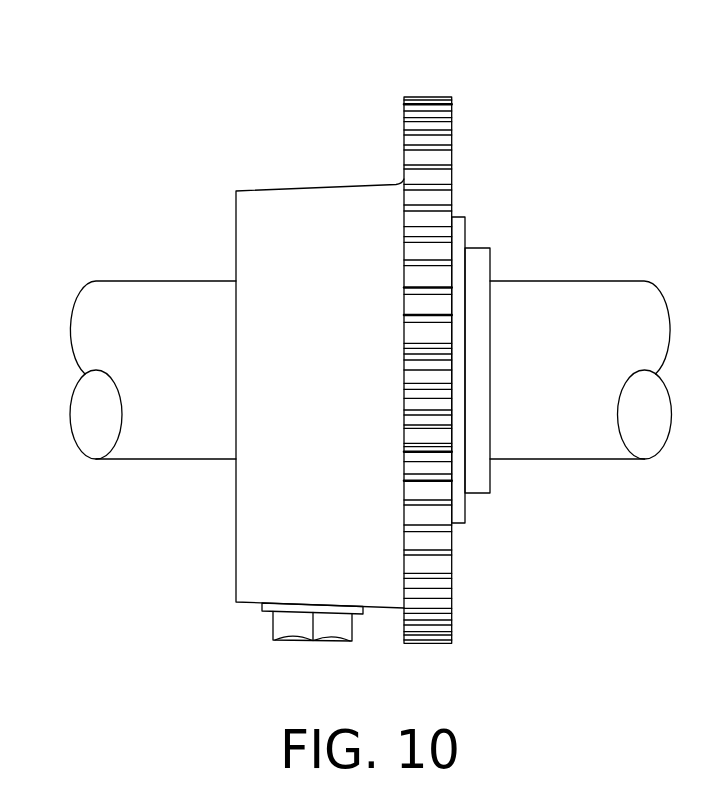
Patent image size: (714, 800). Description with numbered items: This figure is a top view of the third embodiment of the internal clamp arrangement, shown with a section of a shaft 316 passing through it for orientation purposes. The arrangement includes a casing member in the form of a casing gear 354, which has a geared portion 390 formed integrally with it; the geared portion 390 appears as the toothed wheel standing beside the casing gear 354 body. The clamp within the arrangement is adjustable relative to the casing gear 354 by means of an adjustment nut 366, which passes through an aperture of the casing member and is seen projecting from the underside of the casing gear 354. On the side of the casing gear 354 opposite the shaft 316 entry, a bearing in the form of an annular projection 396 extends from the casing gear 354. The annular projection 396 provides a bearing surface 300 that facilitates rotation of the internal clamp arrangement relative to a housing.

The bearing surface 300 is at (480, 486).
The shaft 316 is at (155, 447).
The casing gear 354 is at (253, 561).
The adjustment nut 366 is at (288, 630).
The geared portion 390 is at (425, 583).
The annular projection 396 is at (490, 262).